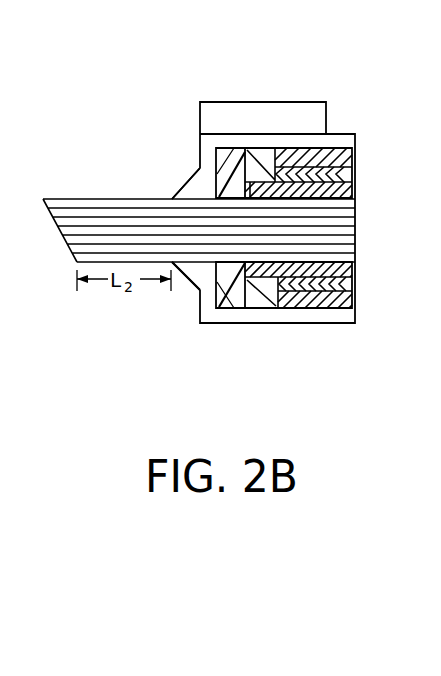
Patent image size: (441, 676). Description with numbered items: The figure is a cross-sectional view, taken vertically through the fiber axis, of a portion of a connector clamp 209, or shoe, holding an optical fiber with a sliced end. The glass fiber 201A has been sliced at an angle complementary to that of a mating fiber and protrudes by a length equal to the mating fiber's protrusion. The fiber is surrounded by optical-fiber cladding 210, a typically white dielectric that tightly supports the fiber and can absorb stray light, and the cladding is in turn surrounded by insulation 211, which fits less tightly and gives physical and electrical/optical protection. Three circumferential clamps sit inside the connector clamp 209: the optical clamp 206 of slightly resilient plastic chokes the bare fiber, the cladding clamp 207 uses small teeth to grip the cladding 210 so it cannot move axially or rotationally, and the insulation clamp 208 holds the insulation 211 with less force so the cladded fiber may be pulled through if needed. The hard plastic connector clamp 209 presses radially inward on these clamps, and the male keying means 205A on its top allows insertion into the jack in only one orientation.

The glass fiber 201A is at (58, 228).
The male keying means 205A is at (218, 115).
The optical clamp 206 is at (230, 155).
The cladding clamp 207 is at (264, 158).
The insulation clamp 208 is at (333, 160).
The connector clamp 209 is at (198, 185).
The optical-fiber cladding 210 is at (350, 185).
The insulation 211 is at (345, 172).